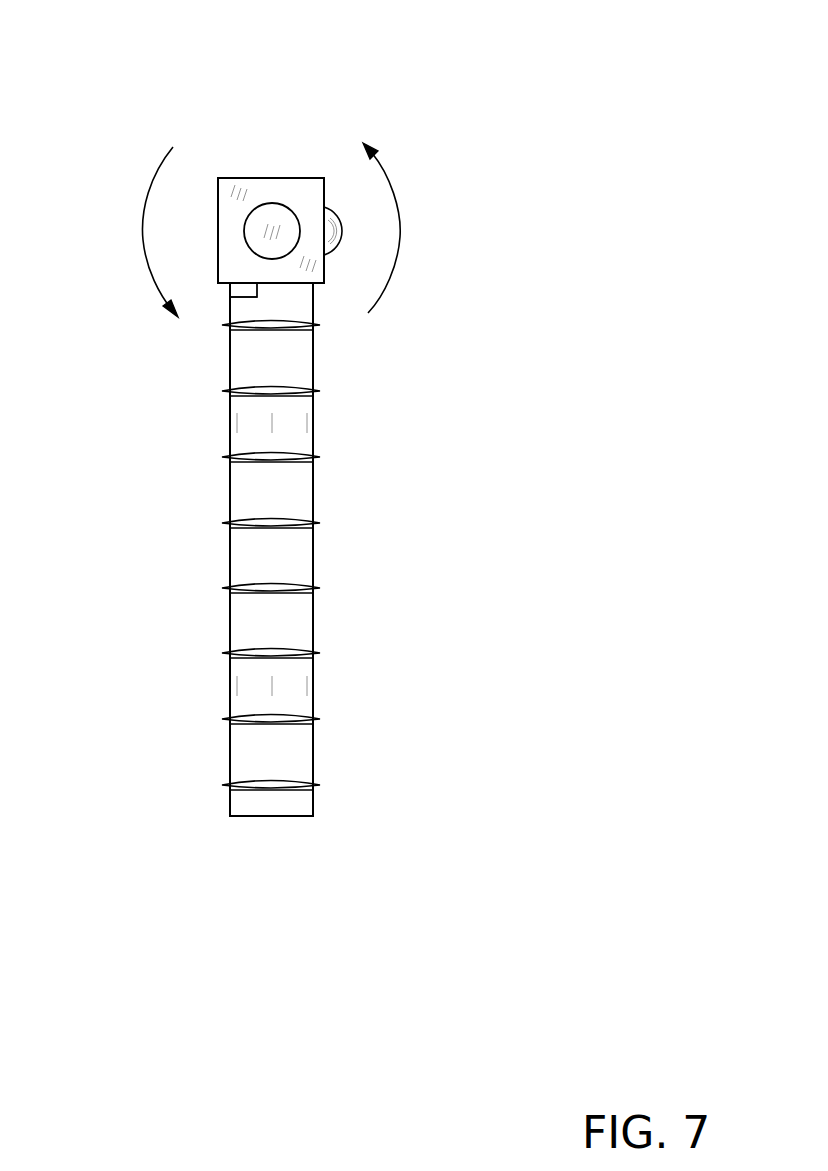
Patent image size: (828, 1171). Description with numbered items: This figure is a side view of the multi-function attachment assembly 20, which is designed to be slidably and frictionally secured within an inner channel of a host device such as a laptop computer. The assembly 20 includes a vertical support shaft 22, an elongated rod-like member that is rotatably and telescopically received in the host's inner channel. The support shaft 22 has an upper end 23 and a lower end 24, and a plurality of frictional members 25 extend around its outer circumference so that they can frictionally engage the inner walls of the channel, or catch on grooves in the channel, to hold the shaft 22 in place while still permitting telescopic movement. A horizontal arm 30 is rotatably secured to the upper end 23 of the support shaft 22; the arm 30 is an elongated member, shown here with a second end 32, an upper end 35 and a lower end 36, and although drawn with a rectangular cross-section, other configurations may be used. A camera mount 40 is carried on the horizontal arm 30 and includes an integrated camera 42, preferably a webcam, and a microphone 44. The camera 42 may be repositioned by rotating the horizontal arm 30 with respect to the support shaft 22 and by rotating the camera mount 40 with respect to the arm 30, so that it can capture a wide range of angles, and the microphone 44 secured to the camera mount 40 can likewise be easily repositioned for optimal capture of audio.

The multi-function attachment assembly 20 is at (241, 468).
The support shaft 22 is at (230, 545).
The upper end 23 is at (313, 297).
The lower end 24 is at (260, 816).
The frictional members 25 is at (320, 523).
The horizontal arm 30 is at (289, 141).
The second end 32 is at (235, 178).
The upper end 35 is at (263, 190).
The lower end 36 is at (257, 297).
The camera mount 40 is at (228, 177).
The camera 42 is at (343, 207).
The microphone 44 is at (275, 213).